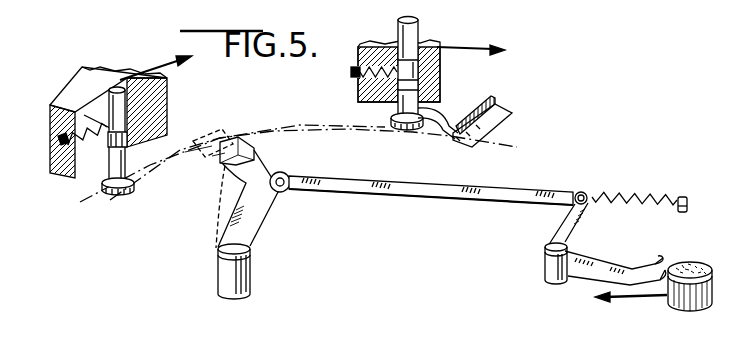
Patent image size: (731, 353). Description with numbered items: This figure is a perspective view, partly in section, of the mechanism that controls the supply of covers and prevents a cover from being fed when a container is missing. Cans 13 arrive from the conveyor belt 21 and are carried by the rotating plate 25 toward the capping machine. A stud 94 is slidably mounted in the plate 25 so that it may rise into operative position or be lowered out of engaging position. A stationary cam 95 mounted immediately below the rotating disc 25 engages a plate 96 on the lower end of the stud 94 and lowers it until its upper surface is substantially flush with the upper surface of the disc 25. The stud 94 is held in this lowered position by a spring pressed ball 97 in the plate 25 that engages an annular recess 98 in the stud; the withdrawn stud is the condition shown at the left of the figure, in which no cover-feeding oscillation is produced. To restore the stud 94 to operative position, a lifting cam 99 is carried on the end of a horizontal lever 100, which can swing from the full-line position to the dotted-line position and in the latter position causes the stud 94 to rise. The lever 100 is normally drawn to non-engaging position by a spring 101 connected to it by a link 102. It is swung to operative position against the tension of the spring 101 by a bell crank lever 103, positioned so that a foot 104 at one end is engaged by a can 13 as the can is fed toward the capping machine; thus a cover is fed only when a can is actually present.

The can 13 is at (690, 262).
The conveyor belt 21 is at (12, 93).
The rotating plate 25 is at (86, 66).
The stud 94 is at (116, 84).
The stationary cam 95 is at (440, 130).
The plate 96 is at (116, 196).
The spring pressed ball 97 is at (107, 123).
The annular recess 98 is at (100, 170).
The lifting cam 99 is at (232, 165).
The horizontal lever 100 is at (258, 218).
The spring 101 is at (637, 194).
The link 102 is at (458, 203).
The bell crank lever 103 is at (597, 266).
The foot 104 is at (651, 262).